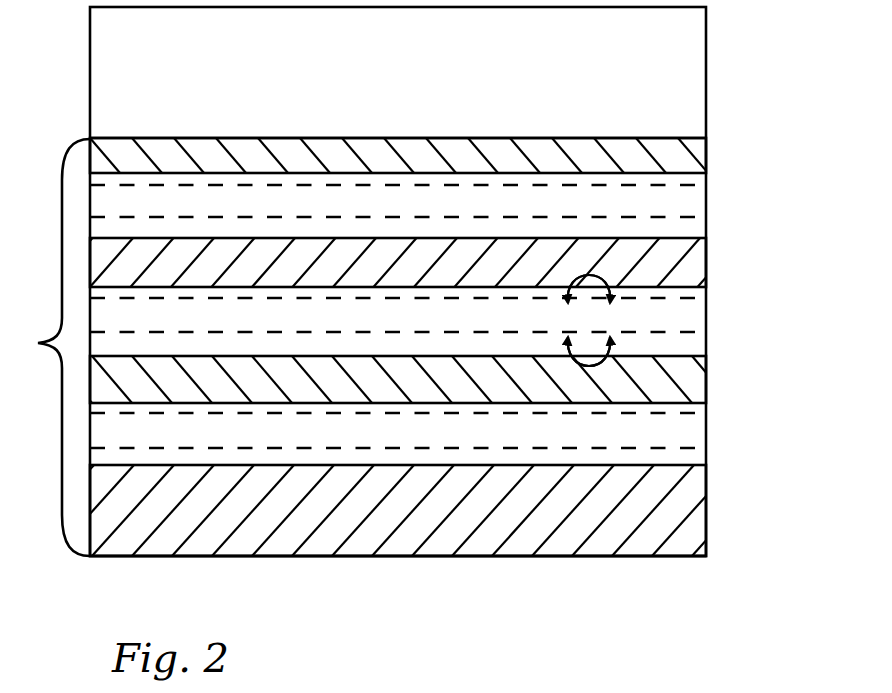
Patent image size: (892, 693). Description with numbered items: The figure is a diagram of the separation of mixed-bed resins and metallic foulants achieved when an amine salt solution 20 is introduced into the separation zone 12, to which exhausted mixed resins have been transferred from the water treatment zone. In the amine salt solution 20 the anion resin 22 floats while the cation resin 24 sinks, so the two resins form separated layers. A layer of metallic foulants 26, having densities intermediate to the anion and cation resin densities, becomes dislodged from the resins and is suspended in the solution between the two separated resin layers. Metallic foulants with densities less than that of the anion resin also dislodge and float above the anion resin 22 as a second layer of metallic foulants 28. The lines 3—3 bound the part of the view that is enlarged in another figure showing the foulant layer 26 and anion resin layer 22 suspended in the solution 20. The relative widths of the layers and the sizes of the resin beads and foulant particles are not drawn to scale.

The separation zone 12 is at (706, 70).
The amine salt solution 20 is at (357, 347).
The second layer of metallic foulants 28 is at (706, 158).
The anion resin 22 is at (706, 265).
The layer of metallic foulants 26 is at (706, 380).
The cation resin 24 is at (706, 525).
The lines 3— 3 is at (589, 320).